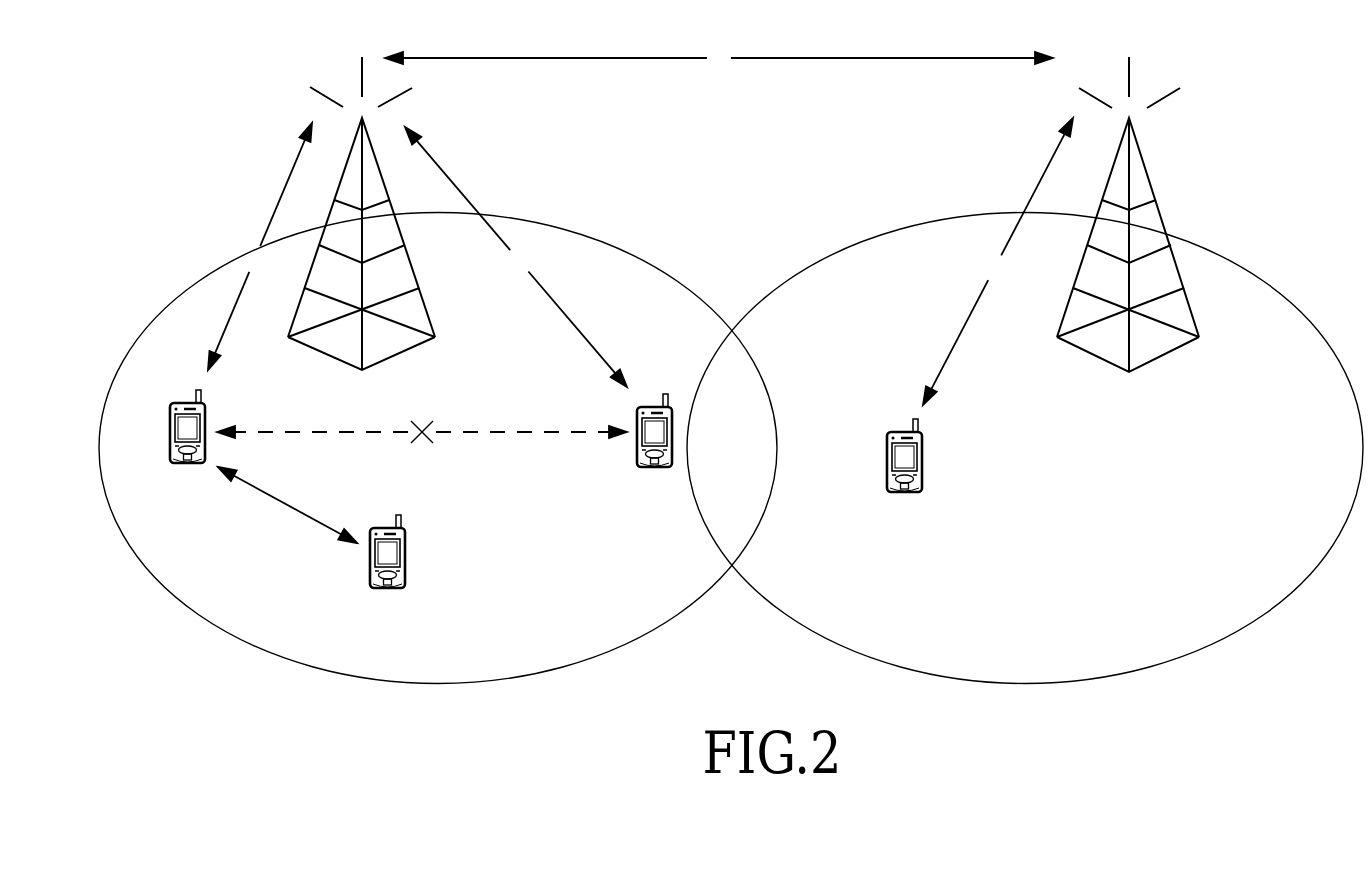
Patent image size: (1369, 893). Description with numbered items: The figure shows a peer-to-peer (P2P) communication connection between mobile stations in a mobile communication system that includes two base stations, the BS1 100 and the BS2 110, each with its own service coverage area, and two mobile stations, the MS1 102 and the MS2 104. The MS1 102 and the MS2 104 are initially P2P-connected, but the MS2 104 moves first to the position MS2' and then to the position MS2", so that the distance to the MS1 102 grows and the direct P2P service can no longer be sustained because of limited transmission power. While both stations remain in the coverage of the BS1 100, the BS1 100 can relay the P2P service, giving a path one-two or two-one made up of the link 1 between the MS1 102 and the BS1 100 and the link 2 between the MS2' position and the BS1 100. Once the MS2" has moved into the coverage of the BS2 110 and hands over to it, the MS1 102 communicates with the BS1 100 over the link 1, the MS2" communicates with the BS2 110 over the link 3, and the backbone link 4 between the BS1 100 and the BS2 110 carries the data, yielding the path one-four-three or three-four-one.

The path segment between MS1 and BS1 1 is at (260, 246).
The path segment between MS2' and BS1 2 is at (516, 257).
The path segment between MS2" and BS2 3 is at (998, 261).
The backbone network link between BS1 and BS2 4 is at (719, 59).
The BS1 100 is at (361, 232).
The MS1 102 is at (188, 455).
The MS2 104 is at (645, 520).
The BS2 110 is at (1128, 232).